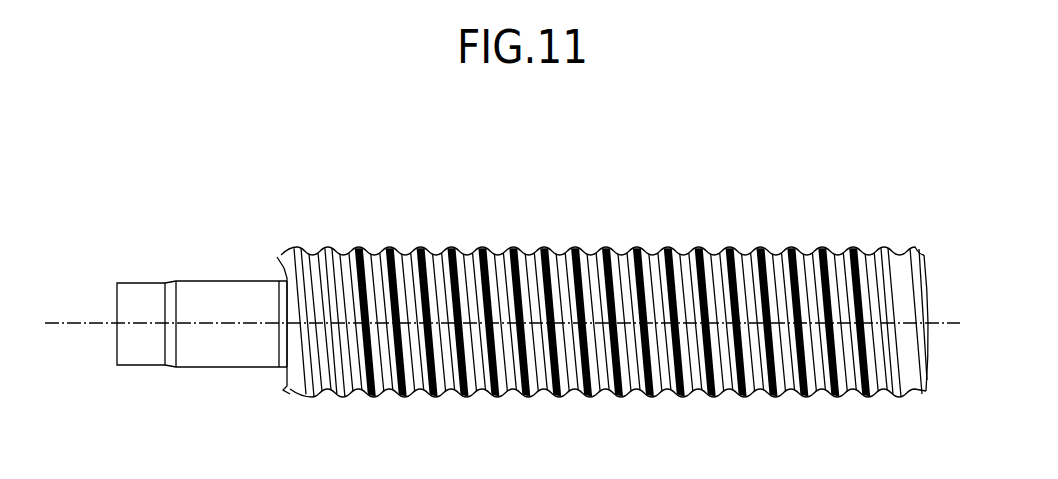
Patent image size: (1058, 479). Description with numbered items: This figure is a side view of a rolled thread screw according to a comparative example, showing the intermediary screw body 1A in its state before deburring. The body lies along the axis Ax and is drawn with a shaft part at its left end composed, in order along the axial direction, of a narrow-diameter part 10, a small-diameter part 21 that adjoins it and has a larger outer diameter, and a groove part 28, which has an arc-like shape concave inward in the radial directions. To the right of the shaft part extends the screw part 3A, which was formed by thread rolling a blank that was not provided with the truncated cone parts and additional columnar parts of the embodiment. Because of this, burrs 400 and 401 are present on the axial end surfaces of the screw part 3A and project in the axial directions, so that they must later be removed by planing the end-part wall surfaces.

The axis Ax is at (78, 320).
The narrow-diameter part 10 is at (137, 352).
The small-diameter part 21 is at (205, 355).
The groove part 28 is at (280, 347).
The burr 400 is at (277, 257).
The intermediary screw body 1A is at (440, 235).
The screw part 3A is at (553, 282).
The burr 401 is at (922, 257).